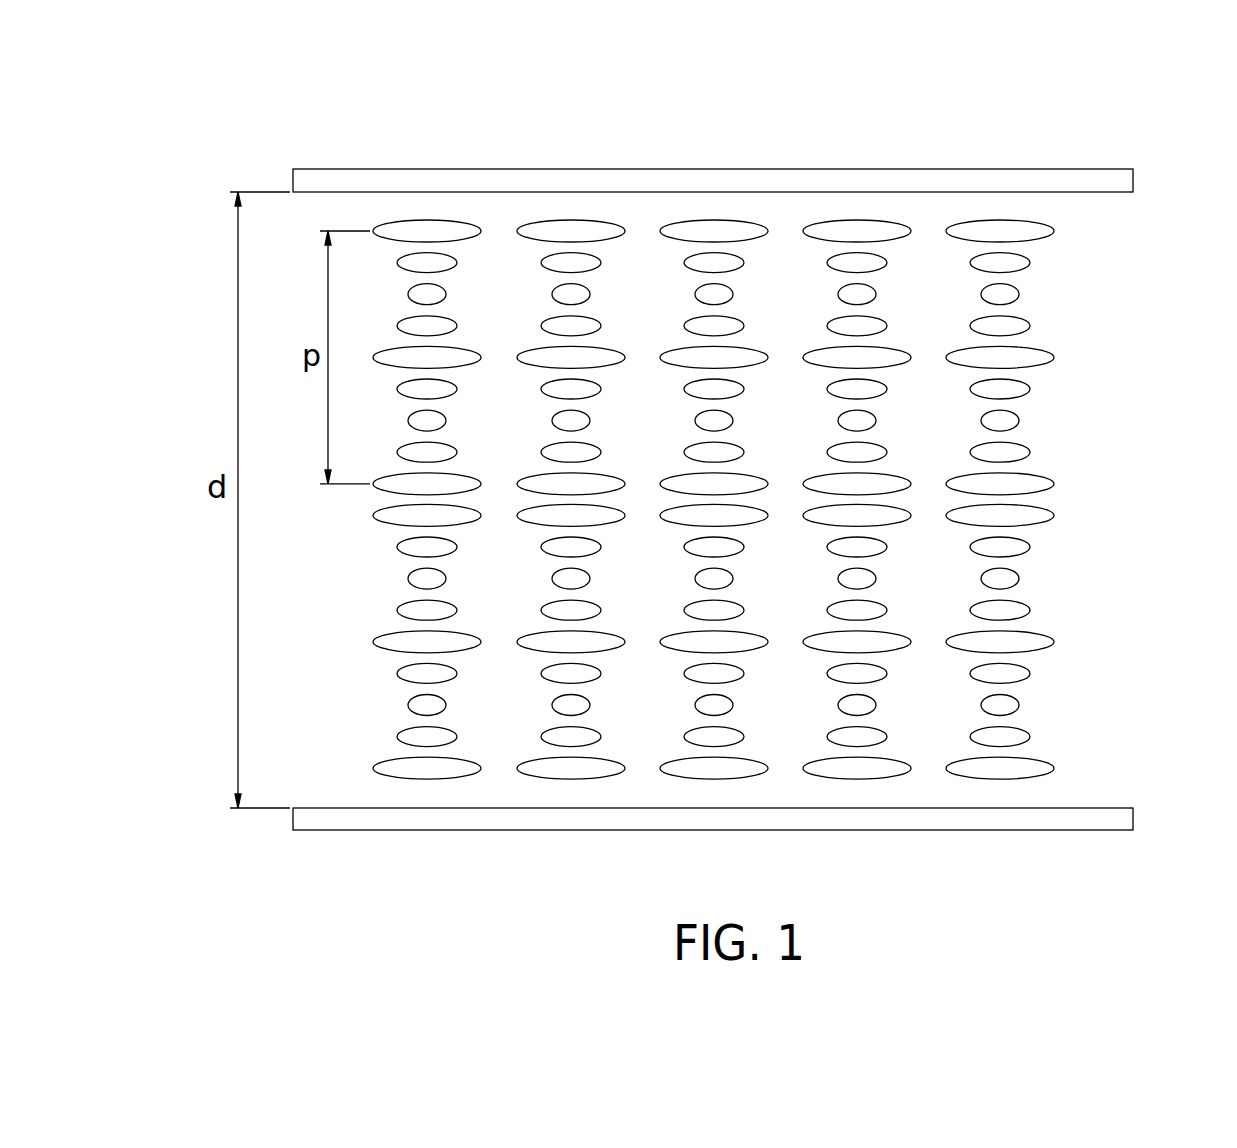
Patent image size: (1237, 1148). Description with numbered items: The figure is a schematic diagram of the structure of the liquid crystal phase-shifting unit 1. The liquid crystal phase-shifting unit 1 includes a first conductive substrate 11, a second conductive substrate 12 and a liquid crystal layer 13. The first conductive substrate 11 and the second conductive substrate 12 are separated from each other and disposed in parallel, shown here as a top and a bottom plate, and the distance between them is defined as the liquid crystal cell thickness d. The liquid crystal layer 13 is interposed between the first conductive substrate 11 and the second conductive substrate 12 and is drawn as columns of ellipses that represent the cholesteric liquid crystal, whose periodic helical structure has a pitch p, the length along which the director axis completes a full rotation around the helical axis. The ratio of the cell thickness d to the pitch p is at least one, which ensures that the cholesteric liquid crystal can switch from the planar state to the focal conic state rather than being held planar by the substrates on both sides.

The liquid crystal phase-shifting unit 1 is at (673, 145).
The first conductive substrate 11 is at (875, 178).
The second conductive substrate 12 is at (994, 822).
The liquid crystal layer 13 is at (1083, 234).